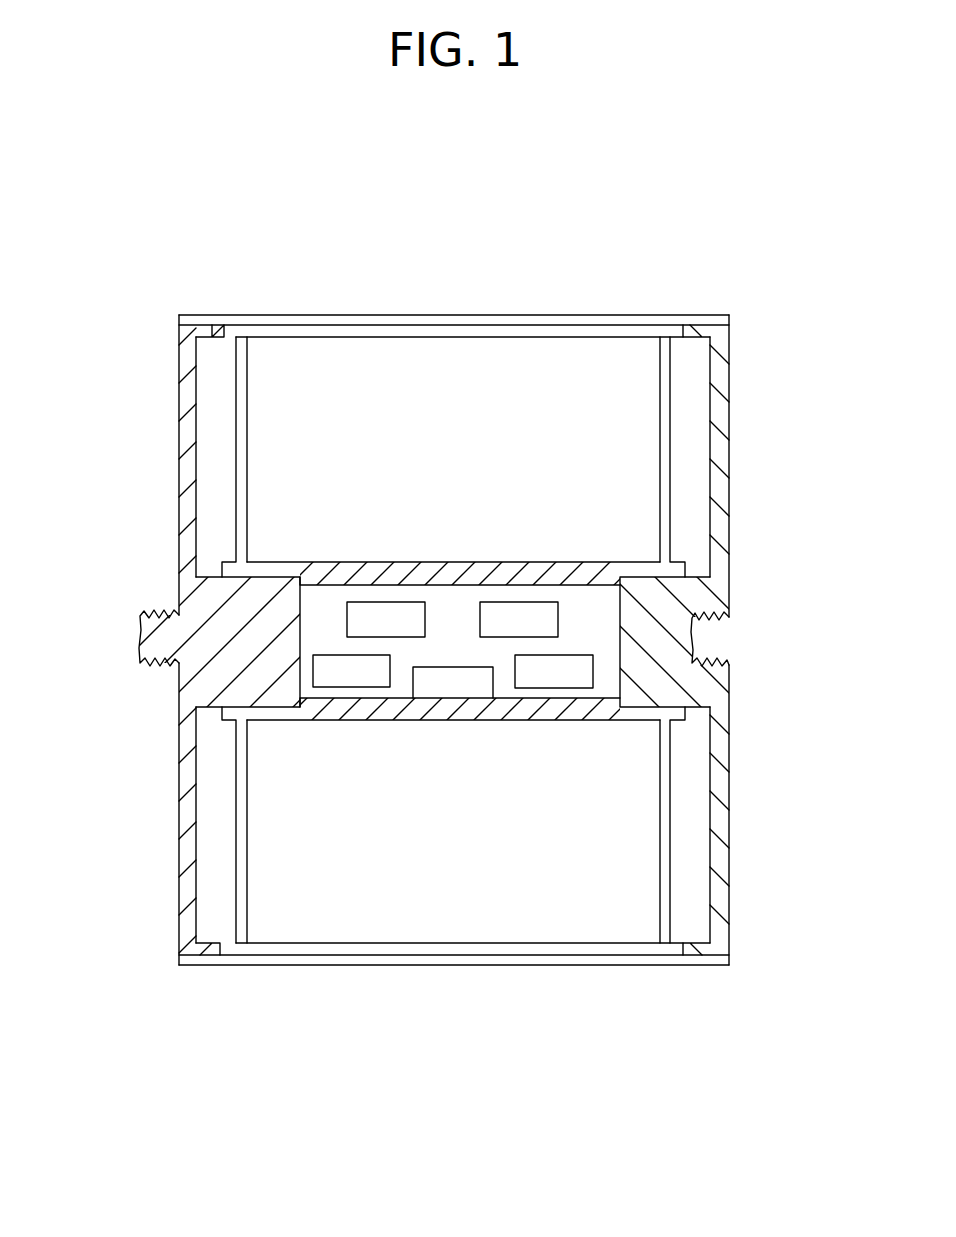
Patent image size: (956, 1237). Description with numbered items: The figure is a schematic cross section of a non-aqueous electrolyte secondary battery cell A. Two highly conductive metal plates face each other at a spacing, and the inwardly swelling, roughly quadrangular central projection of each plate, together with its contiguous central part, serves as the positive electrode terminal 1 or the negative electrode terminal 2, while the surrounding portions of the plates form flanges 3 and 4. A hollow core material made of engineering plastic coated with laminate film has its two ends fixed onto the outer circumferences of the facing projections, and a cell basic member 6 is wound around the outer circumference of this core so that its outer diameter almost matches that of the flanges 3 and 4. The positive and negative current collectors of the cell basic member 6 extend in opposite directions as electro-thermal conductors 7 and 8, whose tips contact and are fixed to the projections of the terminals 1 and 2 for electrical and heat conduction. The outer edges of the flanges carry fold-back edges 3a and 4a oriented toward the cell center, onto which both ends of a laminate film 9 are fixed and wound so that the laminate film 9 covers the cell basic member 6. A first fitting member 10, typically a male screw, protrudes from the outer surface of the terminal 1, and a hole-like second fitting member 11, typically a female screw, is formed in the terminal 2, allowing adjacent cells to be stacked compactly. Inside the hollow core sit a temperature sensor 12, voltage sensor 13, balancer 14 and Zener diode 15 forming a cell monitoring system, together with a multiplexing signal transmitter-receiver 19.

The non-aqueous electrolyte secondary battery cell A is at (517, 280).
The positive electrode terminal 1 is at (195, 688).
The negative electrode terminal 2 is at (673, 675).
The flange 3 is at (195, 378).
The fold-back edge 3a is at (221, 330).
The flange 4 is at (718, 470).
The fold-back edge 4a is at (708, 325).
The cell basic member 6 is at (568, 385).
The electro-thermal conductor 7 is at (237, 452).
The electro-thermal conductor 8 is at (672, 435).
The laminate film 9 is at (354, 315).
The first fitting member 10 is at (140, 643).
The second fitting member 11 is at (692, 640).
The temperature sensor 12 is at (440, 690).
The voltage sensor 13 is at (372, 622).
The balancer 14 is at (542, 614).
The Zener diode 15 is at (545, 675).
The signal transmitter-receiver 19 is at (345, 675).